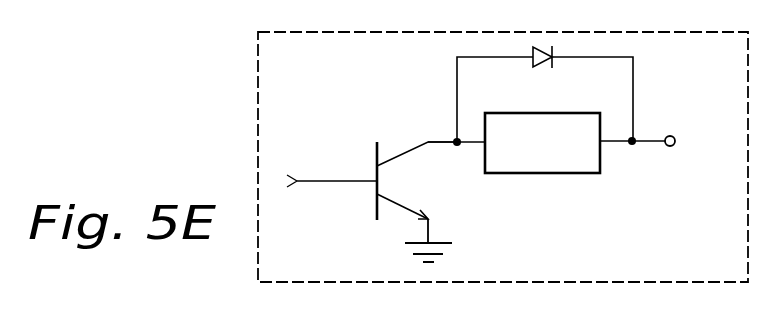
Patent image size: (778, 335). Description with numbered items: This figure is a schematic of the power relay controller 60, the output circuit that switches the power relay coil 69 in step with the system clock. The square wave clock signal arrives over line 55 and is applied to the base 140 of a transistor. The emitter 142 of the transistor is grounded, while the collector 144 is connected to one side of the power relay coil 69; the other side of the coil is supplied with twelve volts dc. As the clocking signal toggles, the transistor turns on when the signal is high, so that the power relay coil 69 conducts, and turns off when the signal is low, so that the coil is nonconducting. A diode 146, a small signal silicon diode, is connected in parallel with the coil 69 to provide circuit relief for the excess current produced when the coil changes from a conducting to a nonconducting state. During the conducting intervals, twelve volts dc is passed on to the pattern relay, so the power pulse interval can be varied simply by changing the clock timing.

The power relay controller 60 is at (258, 120).
The line 55 is at (318, 177).
The base 140 is at (368, 184).
The collector 144 is at (410, 141).
The emitter 142 is at (433, 217).
The diode 146 is at (536, 60).
The power relay coil 69 is at (600, 160).